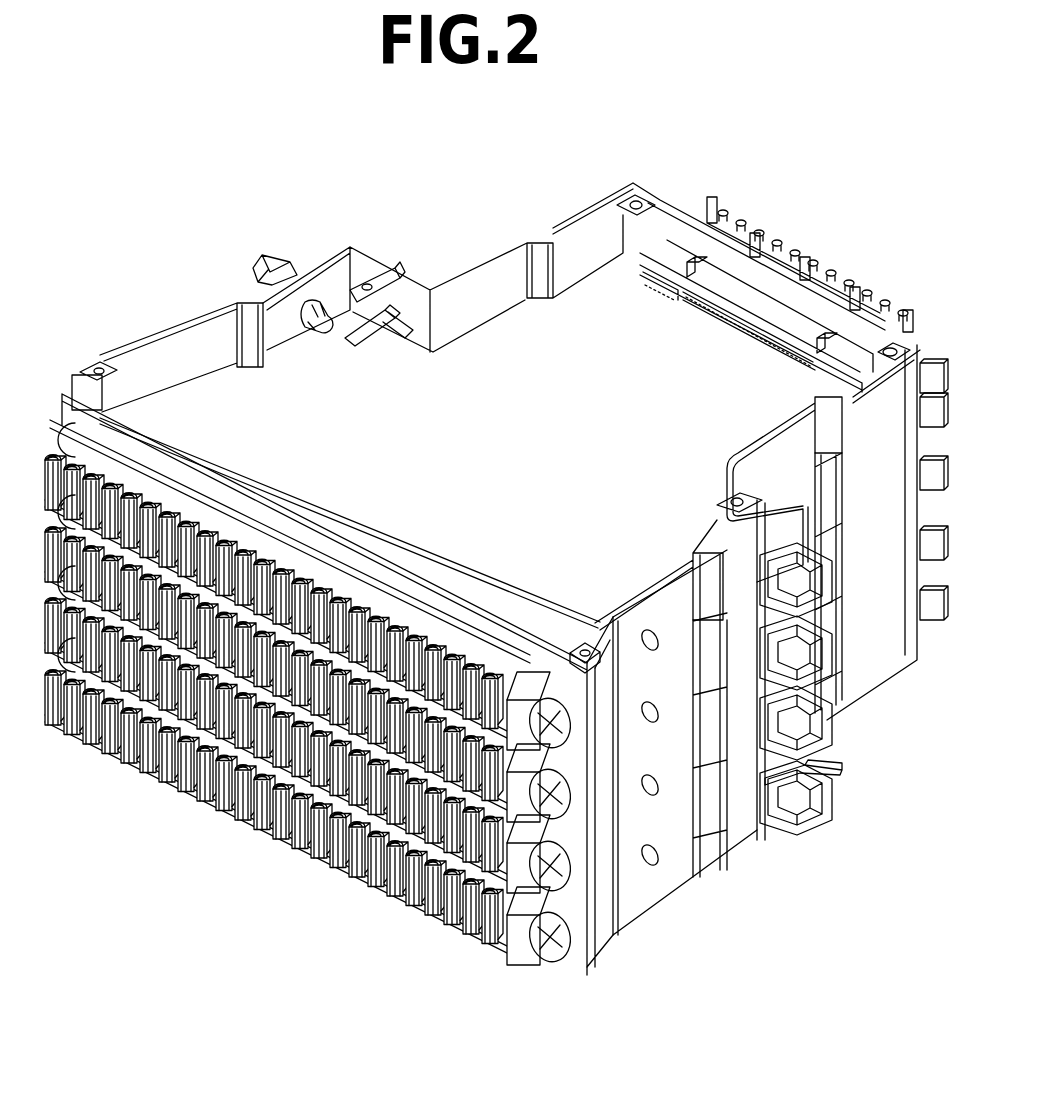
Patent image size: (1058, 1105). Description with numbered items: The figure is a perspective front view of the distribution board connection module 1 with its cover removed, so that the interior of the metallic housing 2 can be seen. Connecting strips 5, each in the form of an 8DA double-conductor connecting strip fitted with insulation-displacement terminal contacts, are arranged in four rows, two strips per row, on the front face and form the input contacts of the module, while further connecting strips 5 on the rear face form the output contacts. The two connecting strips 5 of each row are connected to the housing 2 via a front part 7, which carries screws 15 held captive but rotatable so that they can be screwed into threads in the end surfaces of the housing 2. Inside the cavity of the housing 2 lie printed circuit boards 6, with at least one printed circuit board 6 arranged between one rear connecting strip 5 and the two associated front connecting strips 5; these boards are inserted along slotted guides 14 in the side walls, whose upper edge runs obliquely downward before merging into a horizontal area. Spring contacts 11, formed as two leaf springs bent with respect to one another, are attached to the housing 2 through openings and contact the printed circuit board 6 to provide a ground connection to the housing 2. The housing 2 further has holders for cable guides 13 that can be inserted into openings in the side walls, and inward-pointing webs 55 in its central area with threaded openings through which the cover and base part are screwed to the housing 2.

The distribution board connection module 1 is at (258, 898).
The housing 2 is at (670, 884).
The connecting strip 5 is at (920, 300).
The printed circuit board 6 is at (527, 393).
The front part 7 is at (580, 963).
The spring contact 11 is at (372, 345).
The cable guide 13 is at (267, 262).
The slotted guide 14 is at (837, 703).
The screw 15 is at (556, 958).
The web 55 is at (385, 275).